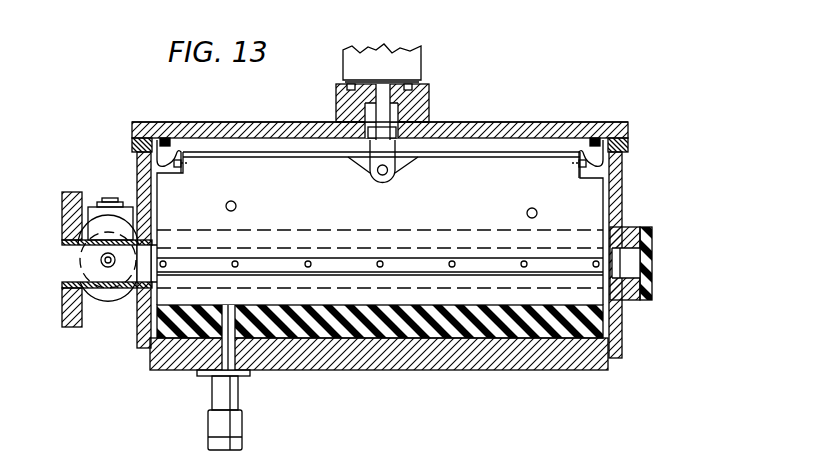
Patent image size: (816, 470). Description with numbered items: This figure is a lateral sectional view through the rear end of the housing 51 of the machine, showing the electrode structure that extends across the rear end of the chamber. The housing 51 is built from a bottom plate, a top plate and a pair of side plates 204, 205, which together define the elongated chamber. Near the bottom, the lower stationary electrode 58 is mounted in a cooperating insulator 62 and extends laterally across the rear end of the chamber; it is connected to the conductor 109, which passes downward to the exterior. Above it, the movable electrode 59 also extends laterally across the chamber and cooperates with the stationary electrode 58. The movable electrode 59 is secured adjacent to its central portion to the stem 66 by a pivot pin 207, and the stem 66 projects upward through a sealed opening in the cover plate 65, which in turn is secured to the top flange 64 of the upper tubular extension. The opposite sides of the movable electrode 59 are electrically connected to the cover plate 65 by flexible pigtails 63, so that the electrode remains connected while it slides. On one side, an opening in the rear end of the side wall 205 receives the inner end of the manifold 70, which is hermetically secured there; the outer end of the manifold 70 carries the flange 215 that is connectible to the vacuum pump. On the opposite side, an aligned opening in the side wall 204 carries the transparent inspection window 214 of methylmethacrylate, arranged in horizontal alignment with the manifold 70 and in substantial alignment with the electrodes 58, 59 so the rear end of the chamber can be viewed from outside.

The housing 51 is at (536, 113).
The lower stationary electrode 58 is at (431, 300).
The movable electrode 59 is at (415, 214).
The insulator 62 is at (146, 350).
The pigtail conductor 63 is at (148, 160).
The flange 64 is at (630, 150).
The cover plate 65 is at (630, 137).
The stem 66 is at (336, 110).
The manifold 70 is at (90, 267).
The conductor 109 is at (224, 363).
The side plate 204 is at (624, 326).
The side plate 205 is at (138, 316).
The pivot pin 207 is at (378, 176).
The transparent window 214 is at (653, 256).
The flange 215 is at (62, 314).